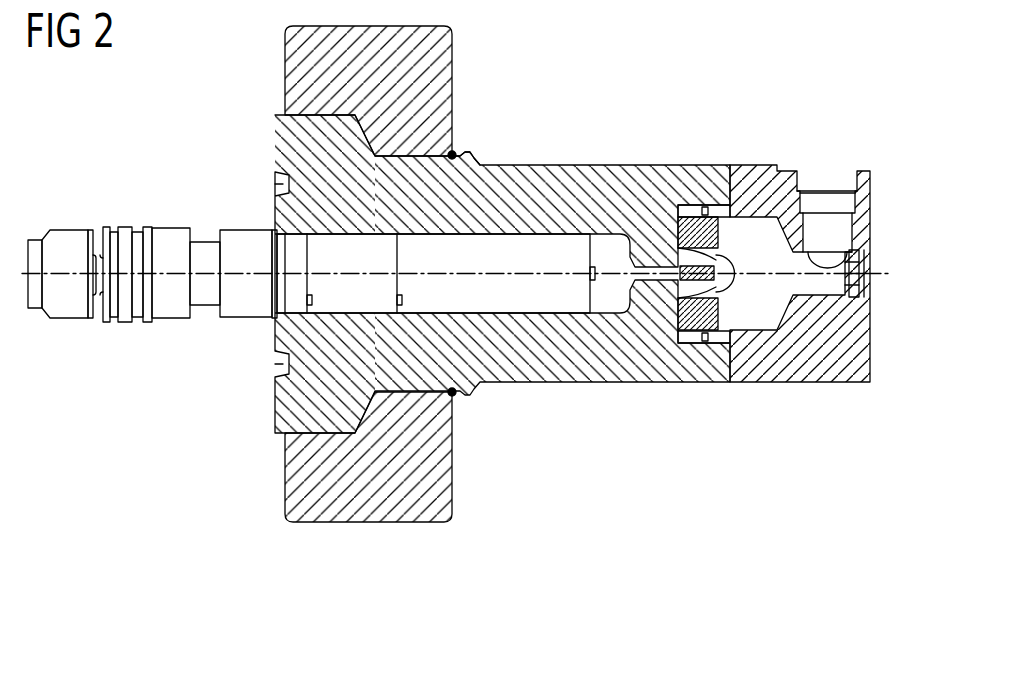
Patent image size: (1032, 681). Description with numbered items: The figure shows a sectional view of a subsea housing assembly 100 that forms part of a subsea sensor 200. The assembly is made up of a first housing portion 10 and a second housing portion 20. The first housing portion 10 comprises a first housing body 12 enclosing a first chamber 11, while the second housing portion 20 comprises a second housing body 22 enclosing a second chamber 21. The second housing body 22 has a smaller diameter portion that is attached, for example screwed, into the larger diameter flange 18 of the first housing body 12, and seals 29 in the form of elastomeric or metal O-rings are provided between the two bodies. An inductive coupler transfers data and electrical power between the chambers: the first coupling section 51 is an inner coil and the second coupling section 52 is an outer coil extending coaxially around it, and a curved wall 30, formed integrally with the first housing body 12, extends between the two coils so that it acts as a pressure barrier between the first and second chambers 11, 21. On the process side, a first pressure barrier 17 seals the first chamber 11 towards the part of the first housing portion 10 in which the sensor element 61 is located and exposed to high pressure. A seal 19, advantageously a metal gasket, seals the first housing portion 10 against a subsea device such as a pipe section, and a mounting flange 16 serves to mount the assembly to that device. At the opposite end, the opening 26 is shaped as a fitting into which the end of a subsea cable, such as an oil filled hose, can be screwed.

The first housing portion 10 is at (501, 311).
The first chamber 11 is at (540, 300).
The first housing body 12 is at (577, 165).
The mounting flange 16 is at (378, 522).
The first pressure barrier 17 is at (322, 283).
The flange 18 is at (712, 167).
The seal 19 is at (275, 184).
The second housing portion 20 is at (831, 311).
The second chamber 21 is at (757, 232).
The second housing body 22 is at (868, 343).
The opening 26 is at (840, 231).
The seals 29 is at (705, 345).
The wall 30 is at (728, 289).
The first coupling section 51 is at (734, 262).
The second coupling section 52 is at (676, 205).
The sensor element 61 is at (68, 245).
The subsea housing assembly 100 is at (574, 311).
The subsea sensor 200 is at (152, 381).